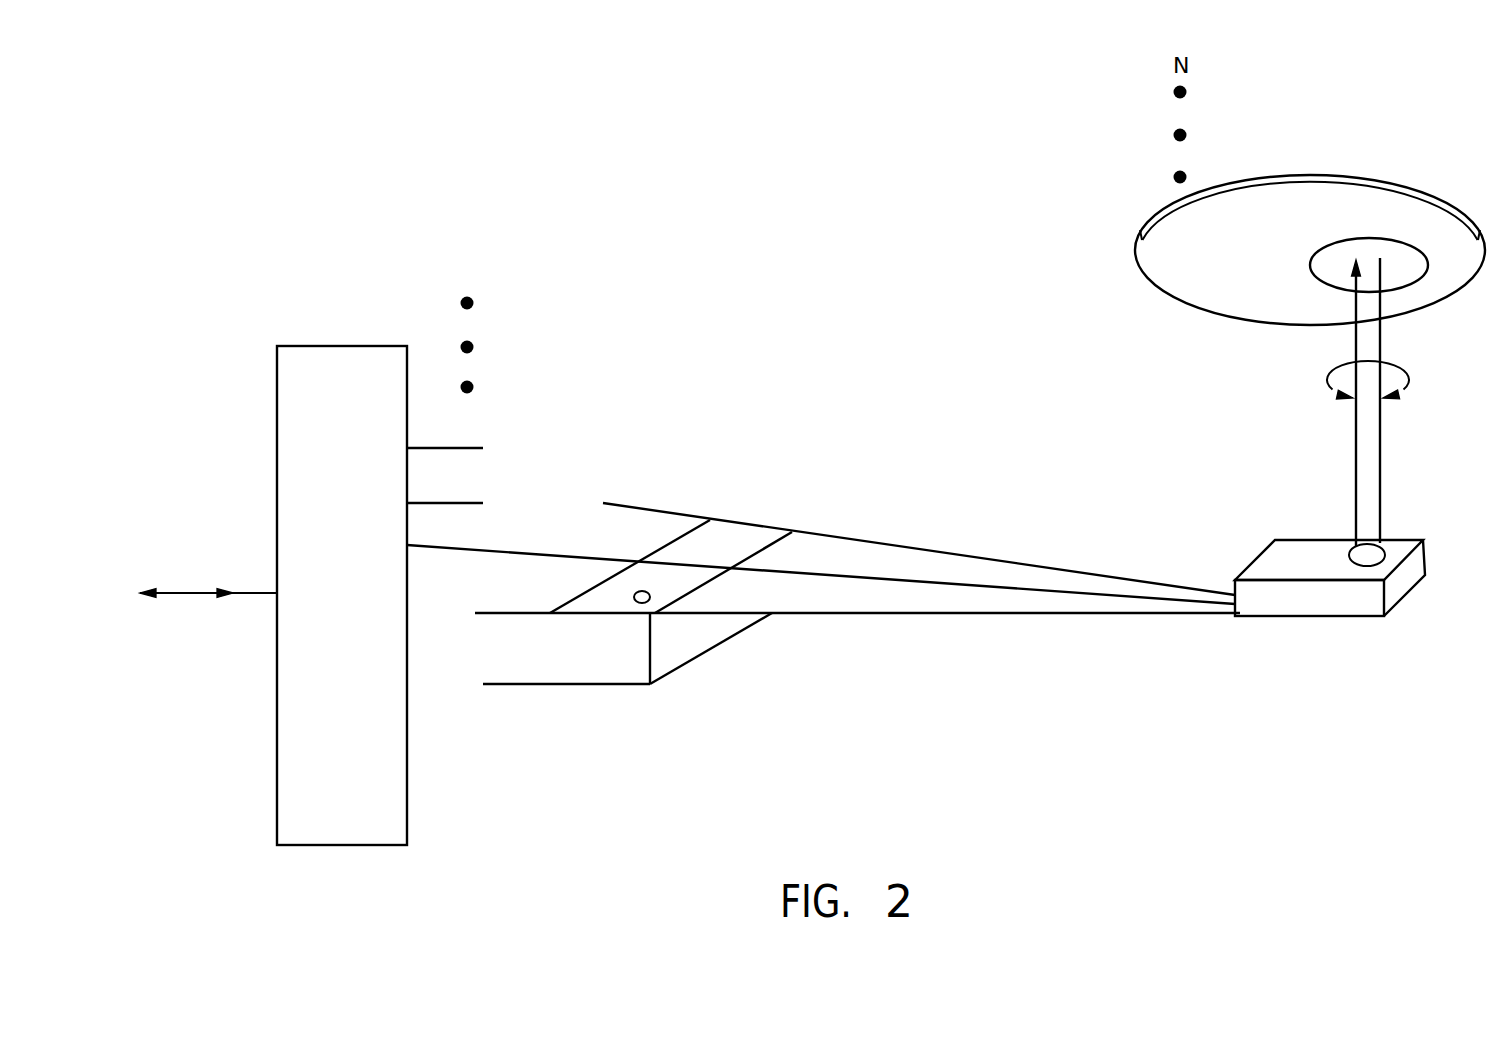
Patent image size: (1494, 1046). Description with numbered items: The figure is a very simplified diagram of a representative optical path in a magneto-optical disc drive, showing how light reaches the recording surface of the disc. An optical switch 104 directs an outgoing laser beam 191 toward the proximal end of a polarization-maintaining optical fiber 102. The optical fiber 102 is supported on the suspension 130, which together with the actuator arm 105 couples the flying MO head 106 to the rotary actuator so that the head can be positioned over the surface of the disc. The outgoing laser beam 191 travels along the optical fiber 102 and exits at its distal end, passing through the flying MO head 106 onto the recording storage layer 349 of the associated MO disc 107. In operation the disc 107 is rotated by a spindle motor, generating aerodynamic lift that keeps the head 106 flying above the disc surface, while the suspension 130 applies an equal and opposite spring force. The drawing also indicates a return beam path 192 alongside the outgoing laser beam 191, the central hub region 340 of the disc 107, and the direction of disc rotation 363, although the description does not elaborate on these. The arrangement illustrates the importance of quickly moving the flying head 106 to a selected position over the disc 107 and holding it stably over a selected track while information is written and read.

The optical switch 104 is at (322, 338).
The optical fiber 102 is at (550, 540).
The actuator arm 105 is at (580, 698).
The suspension 130 is at (952, 628).
The flying MO head 106 is at (1313, 628).
The MO disc 107 is at (1166, 308).
The recording storage layer 349 is at (1307, 183).
The disk central hub hole 340 is at (1406, 247).
The disk rotation direction 363 is at (1390, 380).
The outgoing laser beam 191 is at (212, 611).
The direction of motion 192 is at (158, 570).